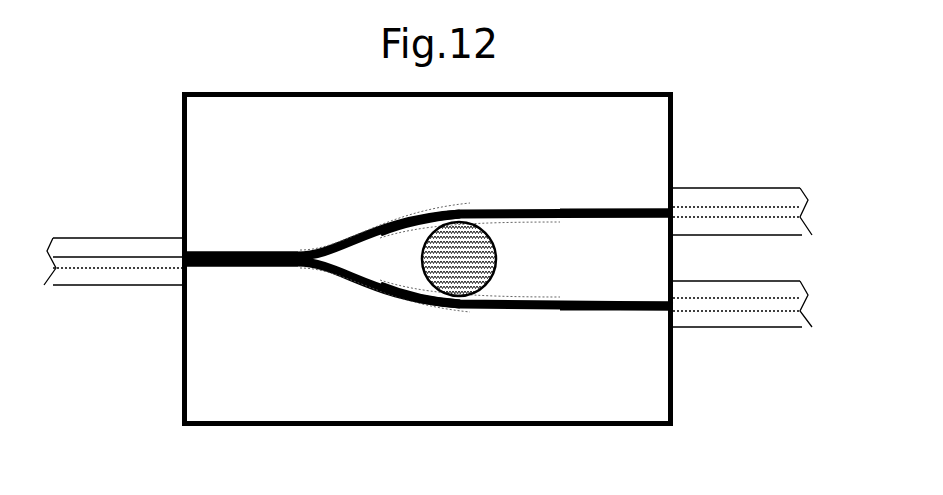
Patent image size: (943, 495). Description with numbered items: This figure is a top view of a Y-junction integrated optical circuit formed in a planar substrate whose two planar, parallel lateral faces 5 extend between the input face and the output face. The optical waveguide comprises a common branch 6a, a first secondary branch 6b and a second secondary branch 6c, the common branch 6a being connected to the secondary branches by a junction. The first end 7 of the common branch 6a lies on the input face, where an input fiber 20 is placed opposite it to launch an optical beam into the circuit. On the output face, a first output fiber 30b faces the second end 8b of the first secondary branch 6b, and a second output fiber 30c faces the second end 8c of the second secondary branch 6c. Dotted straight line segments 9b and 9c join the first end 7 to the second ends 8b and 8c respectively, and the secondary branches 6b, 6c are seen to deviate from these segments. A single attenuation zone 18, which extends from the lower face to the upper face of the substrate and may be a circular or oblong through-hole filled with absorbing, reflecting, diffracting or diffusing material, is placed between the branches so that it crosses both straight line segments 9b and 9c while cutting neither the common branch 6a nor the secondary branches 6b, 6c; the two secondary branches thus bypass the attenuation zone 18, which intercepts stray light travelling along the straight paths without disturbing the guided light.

The lateral face 5 is at (266, 94).
The input optical fiber 20 is at (128, 238).
The first output fiber 30b is at (724, 188).
The second output fiber 30c is at (724, 327).
The common branch 6a is at (213, 270).
The first end 7 is at (188, 253).
The first secondary branch 6b is at (508, 204).
The second secondary branch 6c is at (633, 312).
The straight line segment 9b is at (405, 236).
The straight line segment 9c is at (497, 290).
The second end 8b is at (656, 208).
The second end 8c is at (660, 301).
The attenuation zone 18 is at (452, 298).